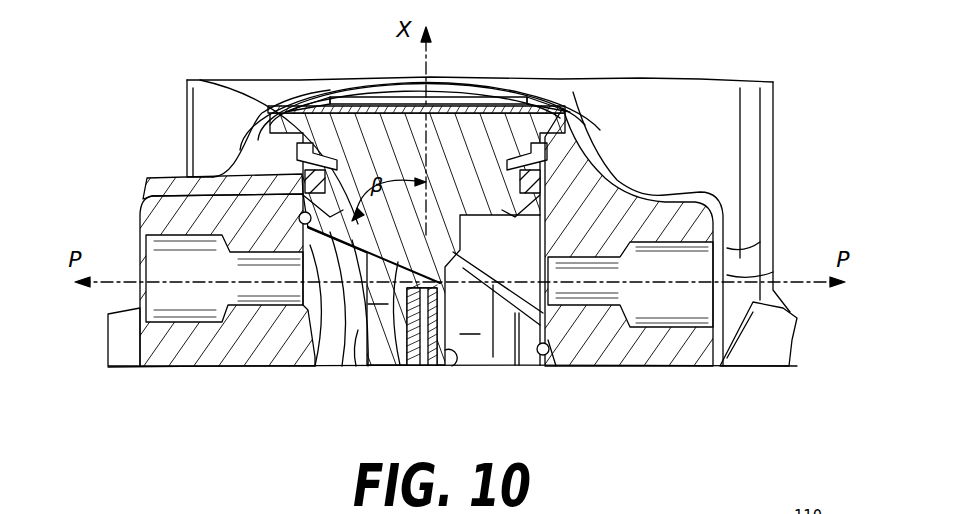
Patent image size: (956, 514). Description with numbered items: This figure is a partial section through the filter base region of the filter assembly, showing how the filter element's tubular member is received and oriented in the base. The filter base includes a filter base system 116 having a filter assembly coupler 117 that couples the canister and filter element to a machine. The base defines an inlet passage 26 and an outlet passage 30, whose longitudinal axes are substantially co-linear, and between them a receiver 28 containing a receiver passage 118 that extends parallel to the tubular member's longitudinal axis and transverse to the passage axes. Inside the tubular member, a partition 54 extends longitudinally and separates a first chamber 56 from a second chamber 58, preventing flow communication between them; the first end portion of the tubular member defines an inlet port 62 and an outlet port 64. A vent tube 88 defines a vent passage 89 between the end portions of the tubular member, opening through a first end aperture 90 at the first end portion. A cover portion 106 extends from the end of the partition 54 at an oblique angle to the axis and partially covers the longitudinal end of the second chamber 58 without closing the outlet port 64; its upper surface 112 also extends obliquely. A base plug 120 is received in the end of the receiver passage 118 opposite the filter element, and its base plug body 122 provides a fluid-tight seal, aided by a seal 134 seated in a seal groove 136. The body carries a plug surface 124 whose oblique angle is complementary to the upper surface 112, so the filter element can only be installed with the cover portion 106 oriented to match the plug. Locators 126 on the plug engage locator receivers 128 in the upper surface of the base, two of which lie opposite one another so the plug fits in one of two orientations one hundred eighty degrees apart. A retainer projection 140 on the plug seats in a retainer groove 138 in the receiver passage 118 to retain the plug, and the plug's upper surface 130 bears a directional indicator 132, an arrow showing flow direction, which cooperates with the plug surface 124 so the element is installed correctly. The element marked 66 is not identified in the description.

The inlet passage 26 is at (667, 315).
The receiver 28 is at (726, 228).
The outlet passage 30 is at (175, 303).
The partition 54 is at (445, 352).
The first chamber 56 is at (500, 290).
The second chamber 58 is at (384, 313).
The inlet port 62 is at (540, 300).
The outlet port 64 is at (296, 328).
The pivot pin 66 is at (304, 226).
The vent tube 88 is at (421, 367).
The vent passage 89 is at (428, 367).
The first end aperture 90 is at (462, 282).
The cover portion 106 is at (414, 366).
The upper surface 112 is at (352, 327).
The filter base system 116 is at (629, 66).
The filter assembly coupler 117 is at (726, 175).
The receiver passage 118 is at (559, 233).
The base plug 120 is at (507, 138).
The base plug body 122 is at (452, 153).
The plug surface 124 is at (311, 106).
The locator 126 is at (268, 138).
The locator receiver 128 is at (186, 93).
The upper surface 130 is at (403, 80).
The directional indicator 132 is at (362, 97).
The seal 134 is at (240, 196).
The seal groove 136 is at (303, 177).
The retainer groove 138 is at (305, 168).
The retainer projection 140 is at (278, 113).